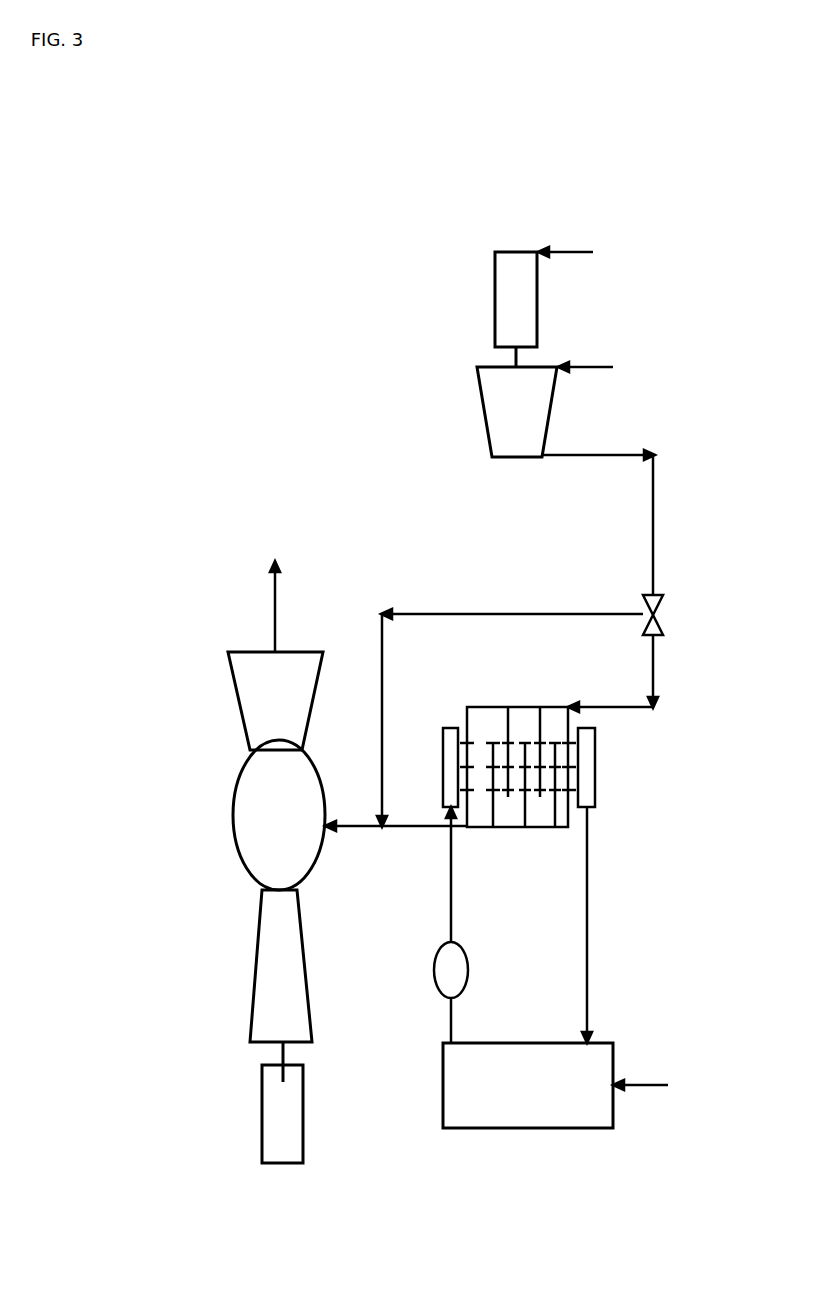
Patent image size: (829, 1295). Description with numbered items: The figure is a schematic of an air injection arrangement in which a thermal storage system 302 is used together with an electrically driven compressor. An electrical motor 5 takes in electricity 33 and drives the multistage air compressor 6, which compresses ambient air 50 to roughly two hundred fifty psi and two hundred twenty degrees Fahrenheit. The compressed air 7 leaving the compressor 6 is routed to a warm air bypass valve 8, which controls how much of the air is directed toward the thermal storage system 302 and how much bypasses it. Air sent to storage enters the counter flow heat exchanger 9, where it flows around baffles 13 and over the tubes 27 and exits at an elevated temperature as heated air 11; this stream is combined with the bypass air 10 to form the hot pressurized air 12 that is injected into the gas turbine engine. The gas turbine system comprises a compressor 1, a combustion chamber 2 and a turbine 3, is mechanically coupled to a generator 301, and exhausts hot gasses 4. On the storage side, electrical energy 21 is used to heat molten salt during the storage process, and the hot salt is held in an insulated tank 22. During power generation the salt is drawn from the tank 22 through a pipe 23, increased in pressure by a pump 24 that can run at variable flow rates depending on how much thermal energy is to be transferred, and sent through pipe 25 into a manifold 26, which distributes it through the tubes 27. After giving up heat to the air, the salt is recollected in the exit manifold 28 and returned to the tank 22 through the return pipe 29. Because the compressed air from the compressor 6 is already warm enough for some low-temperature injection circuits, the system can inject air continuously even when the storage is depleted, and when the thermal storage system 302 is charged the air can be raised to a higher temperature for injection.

The compressor 1 is at (281, 986).
The combustion chamber 2 is at (279, 815).
The turbine 3 is at (275, 701).
The hot gasses 4 is at (268, 606).
The electrical motor 5 is at (516, 309).
The multistage air compressor 6 is at (517, 412).
The compressed air 7 is at (598, 510).
The warm air bypass valve 8 is at (663, 615).
The counter flow heat exchanger 9 is at (622, 679).
The bypass air 10 is at (510, 705).
The heated air 11 is at (424, 840).
The hot pressurized air 12 is at (353, 816).
The baffles 13 is at (497, 808).
The electrical energy 21 is at (655, 1085).
The insulated tank 22 is at (528, 1085).
The pipe 23 is at (439, 1020).
The pump 24 is at (464, 970).
The pipe 25 is at (441, 874).
The manifold 26 is at (438, 767).
The tubes 27 is at (497, 745).
The exit manifold 28 is at (599, 767).
The return pipe 29 is at (598, 925).
The electricity 33 is at (581, 252).
The ambient air 50 is at (601, 367).
The generator 301 is at (277, 1122).
The thermal storage system 302 is at (524, 752).